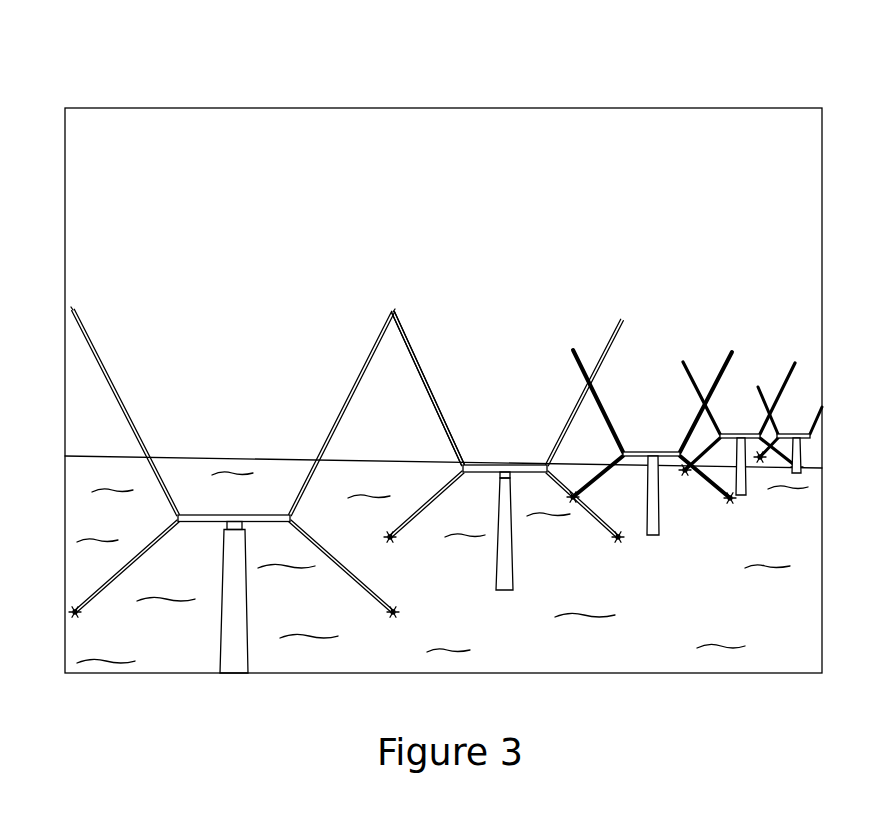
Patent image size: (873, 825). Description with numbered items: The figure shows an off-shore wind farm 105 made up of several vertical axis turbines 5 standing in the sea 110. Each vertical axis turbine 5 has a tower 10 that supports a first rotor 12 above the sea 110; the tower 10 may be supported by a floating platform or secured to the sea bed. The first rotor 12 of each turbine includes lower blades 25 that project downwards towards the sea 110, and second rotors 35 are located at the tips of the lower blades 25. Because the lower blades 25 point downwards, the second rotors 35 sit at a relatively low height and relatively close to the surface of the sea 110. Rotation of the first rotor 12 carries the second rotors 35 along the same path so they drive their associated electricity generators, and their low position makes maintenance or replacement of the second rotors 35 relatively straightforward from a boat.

The off-shore wind farm 105 is at (175, 88).
The vertical axis turbine 5 is at (421, 432).
The first rotor 12 is at (458, 398).
The lower blades 25 is at (420, 515).
The tower 10 is at (508, 568).
The second rotors 35 is at (620, 538).
The sea 110 is at (535, 643).